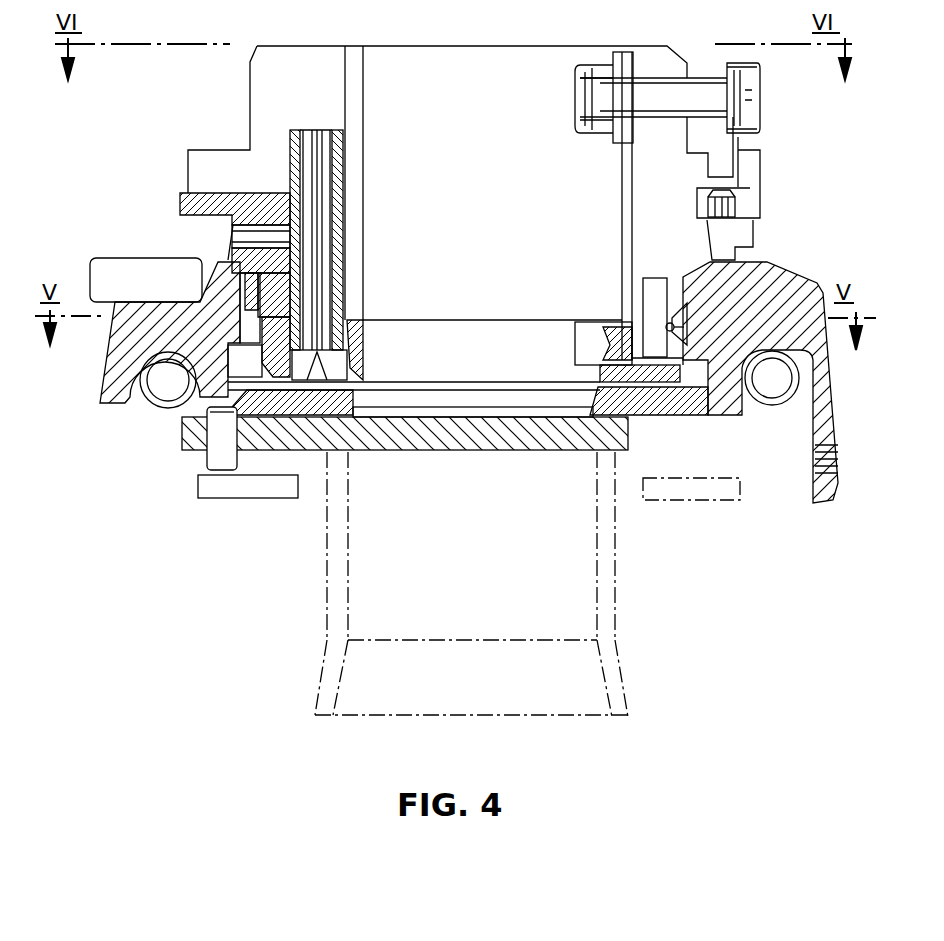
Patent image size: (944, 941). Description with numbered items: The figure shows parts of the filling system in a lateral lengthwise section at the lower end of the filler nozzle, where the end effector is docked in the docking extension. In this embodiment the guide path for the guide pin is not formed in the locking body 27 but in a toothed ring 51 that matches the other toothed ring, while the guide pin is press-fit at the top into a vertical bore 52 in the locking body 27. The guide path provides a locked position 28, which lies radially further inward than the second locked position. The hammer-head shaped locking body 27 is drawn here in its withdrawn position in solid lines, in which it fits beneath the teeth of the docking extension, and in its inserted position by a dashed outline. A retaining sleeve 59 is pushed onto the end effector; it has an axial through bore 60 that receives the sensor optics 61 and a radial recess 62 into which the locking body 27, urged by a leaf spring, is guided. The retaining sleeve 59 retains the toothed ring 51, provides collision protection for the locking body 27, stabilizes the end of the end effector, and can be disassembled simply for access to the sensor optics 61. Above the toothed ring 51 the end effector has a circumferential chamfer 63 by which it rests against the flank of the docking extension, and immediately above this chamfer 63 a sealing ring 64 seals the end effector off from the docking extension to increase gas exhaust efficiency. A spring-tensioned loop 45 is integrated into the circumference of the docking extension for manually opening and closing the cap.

The locking body 27 is at (708, 353).
The locked position 28 is at (660, 290).
The loop 45 is at (133, 273).
The toothed ring 51 is at (270, 303).
The vertical bore 52 is at (667, 325).
The retaining sleeve 59 is at (640, 400).
The through bore 60 is at (360, 390).
The sensor optics 61 is at (342, 183).
The radial recess 62 is at (608, 368).
The circumferential chamfer 63 is at (236, 272).
The sealing ring 64 is at (205, 237).